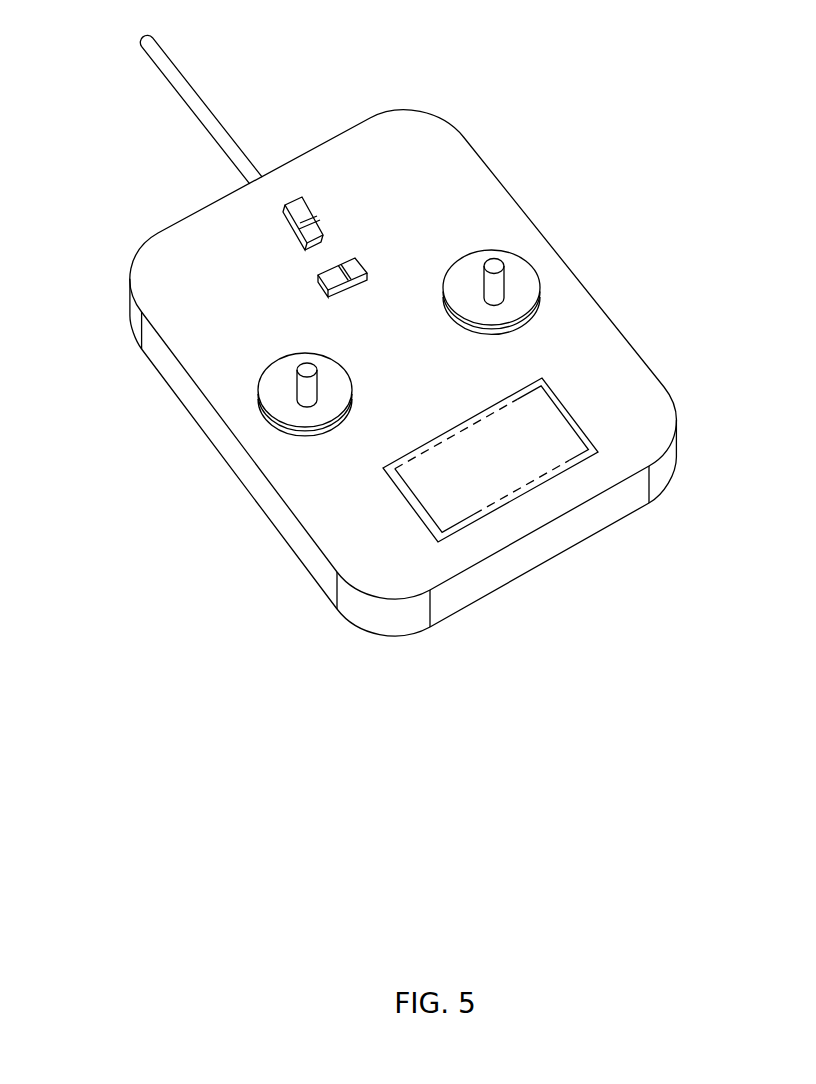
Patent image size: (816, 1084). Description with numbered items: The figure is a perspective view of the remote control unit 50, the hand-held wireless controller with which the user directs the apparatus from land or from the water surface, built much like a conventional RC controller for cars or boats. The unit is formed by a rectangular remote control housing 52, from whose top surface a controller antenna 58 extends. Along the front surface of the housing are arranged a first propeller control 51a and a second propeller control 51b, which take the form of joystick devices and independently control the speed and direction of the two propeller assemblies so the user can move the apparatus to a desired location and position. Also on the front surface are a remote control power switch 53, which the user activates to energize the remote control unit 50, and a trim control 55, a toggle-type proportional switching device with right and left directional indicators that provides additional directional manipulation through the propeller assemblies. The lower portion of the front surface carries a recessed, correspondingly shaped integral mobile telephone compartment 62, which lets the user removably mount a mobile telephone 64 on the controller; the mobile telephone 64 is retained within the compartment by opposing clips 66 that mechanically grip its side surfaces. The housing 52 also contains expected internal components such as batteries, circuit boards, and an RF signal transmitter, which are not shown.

The remote control unit 50 is at (113, 220).
The remote control housing 52 is at (610, 318).
The controller antenna 58 is at (182, 70).
The remote control power switch 53 is at (295, 207).
The trim control 55 is at (367, 272).
The first propeller control 51a is at (262, 423).
The second propeller control 51b is at (538, 277).
The mobile telephone compartment 62 is at (510, 398).
The mobile telephone 64 is at (482, 507).
The clips 66 is at (580, 420).